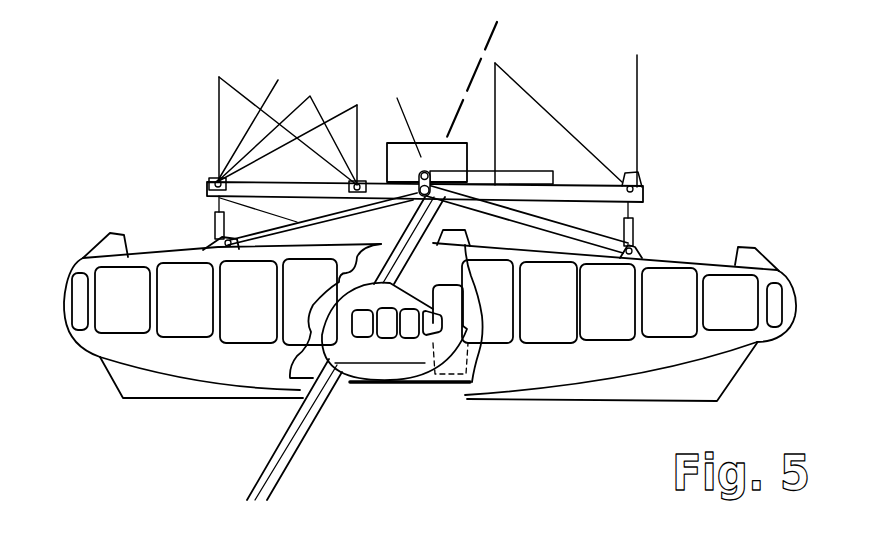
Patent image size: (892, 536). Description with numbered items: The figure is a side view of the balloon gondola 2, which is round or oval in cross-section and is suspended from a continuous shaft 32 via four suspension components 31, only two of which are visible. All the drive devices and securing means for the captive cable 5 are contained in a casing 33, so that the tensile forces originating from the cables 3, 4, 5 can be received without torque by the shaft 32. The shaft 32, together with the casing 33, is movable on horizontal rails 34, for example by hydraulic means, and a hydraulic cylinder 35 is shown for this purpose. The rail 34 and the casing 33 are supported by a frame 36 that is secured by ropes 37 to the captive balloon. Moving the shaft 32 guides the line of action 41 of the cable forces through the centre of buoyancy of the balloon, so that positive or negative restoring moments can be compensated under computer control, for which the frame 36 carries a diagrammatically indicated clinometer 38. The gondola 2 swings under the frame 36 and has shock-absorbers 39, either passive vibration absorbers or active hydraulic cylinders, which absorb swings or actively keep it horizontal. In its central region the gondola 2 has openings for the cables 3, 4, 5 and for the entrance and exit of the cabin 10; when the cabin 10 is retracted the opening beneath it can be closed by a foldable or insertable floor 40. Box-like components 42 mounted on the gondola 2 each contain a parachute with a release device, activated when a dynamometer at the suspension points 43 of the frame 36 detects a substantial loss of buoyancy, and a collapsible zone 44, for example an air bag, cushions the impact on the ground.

The gondola 2 is at (787, 322).
The cable 3 is at (284, 452).
The cable 4 is at (294, 434).
The captive cable 5 is at (303, 407).
The cabin 10 is at (413, 350).
The suspension component 31 is at (208, 190).
The shaft 32 is at (419, 189).
The casing 33 is at (420, 157).
The horizontal rail 34 is at (216, 182).
The hydraulic cylinder 35 is at (528, 176).
The frame 36 is at (571, 193).
The rope 37 is at (217, 181).
The clinometer 38 is at (640, 173).
The shock-absorber 39 is at (638, 230).
The floor 40 is at (387, 383).
The line of action 41 is at (466, 90).
The box-like component 42 is at (113, 247).
The suspension point 43 is at (215, 185).
The collapsible zone 44 is at (712, 378).